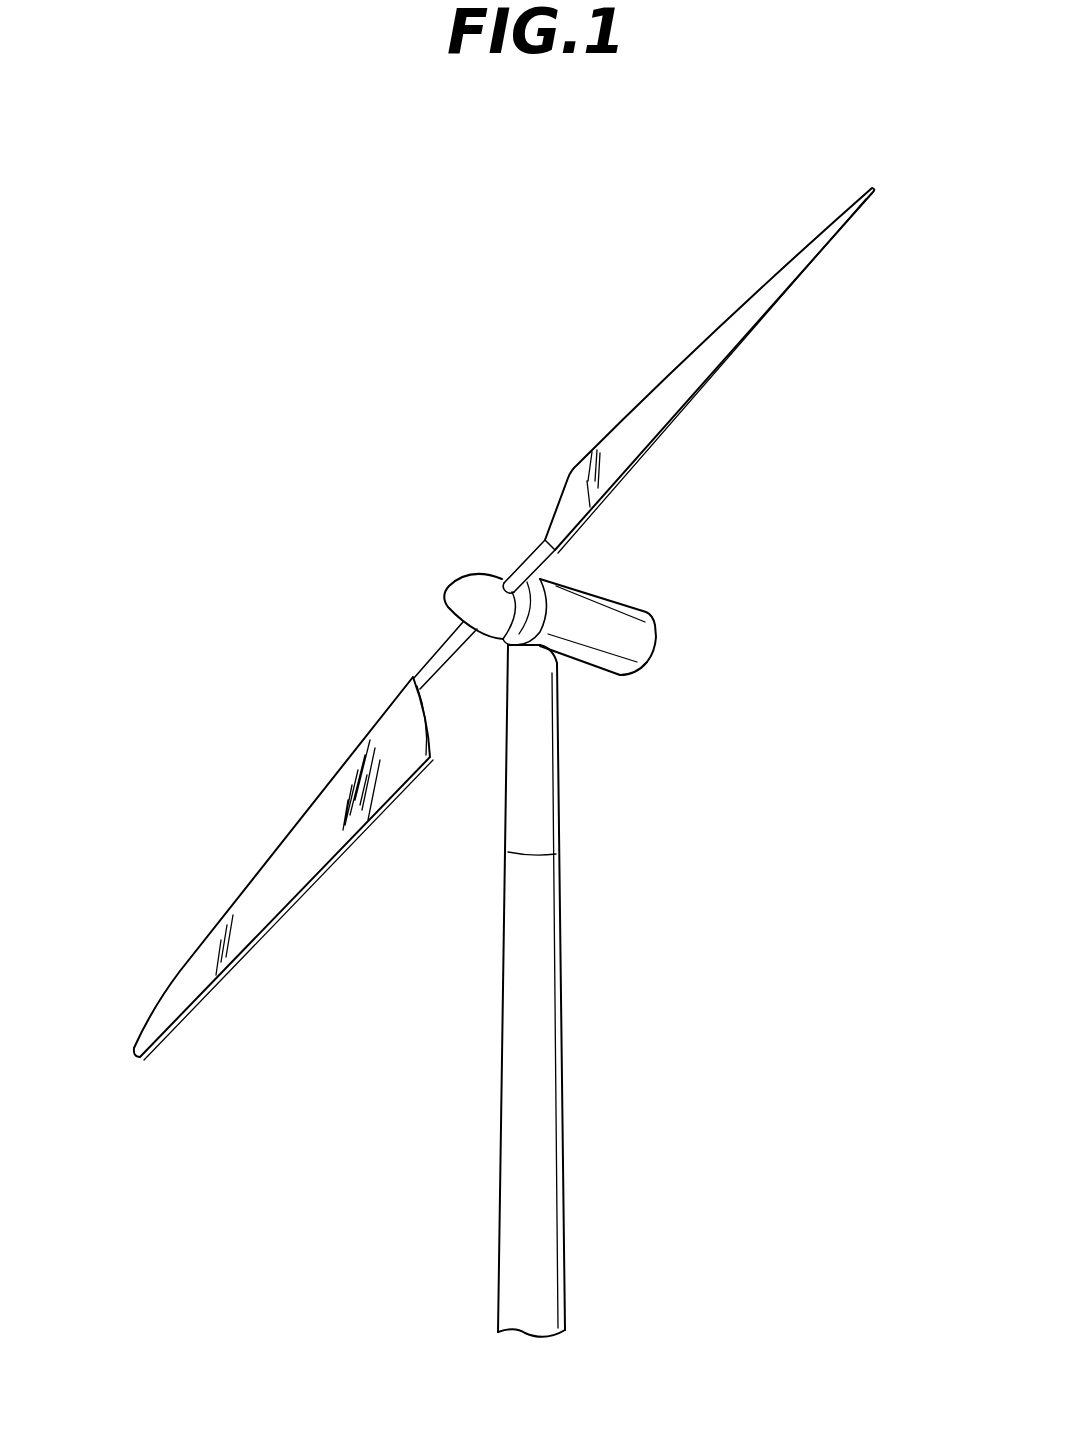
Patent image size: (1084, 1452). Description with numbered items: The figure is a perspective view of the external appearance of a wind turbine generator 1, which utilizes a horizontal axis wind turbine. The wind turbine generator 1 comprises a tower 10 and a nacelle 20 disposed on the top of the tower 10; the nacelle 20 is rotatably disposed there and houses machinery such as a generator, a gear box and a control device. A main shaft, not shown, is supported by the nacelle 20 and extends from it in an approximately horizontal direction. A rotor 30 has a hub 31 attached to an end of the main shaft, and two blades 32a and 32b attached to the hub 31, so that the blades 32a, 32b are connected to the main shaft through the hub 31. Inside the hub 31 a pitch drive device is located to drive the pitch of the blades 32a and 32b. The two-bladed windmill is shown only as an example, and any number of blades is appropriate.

The wind turbine generator 1 is at (390, 297).
The tower 10 is at (540, 1033).
The nacelle 20 is at (630, 632).
The rotor 30 is at (618, 410).
The hub 31 is at (466, 595).
The blade 32a is at (682, 380).
The blade 32b is at (255, 905).